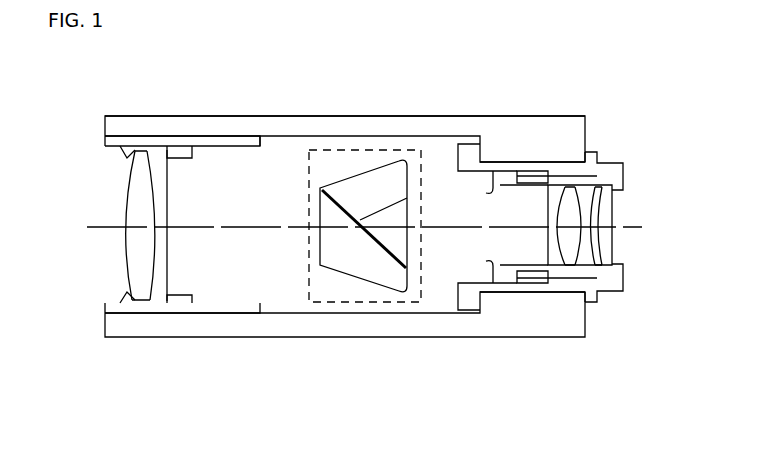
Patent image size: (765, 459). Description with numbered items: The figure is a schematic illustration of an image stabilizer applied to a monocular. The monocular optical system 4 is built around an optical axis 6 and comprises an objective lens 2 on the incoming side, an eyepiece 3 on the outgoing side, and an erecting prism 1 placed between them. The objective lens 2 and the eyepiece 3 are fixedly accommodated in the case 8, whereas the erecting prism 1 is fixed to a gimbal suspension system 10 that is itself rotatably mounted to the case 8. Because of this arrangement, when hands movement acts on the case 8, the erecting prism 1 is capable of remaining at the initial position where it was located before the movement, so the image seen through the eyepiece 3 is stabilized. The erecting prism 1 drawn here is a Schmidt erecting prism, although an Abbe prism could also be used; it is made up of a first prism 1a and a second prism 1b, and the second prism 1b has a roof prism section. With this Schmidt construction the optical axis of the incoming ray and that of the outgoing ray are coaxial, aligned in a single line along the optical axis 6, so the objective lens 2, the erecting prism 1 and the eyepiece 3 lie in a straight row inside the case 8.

The erecting prism 1 is at (335, 248).
The first prism 1a is at (328, 218).
The second prism 1b is at (352, 187).
The objective lens 2 is at (131, 270).
The eyepiece 3 is at (613, 243).
The monocular optical system 4 is at (235, 352).
The optical axis 6 is at (107, 226).
The case 8 is at (147, 128).
The gimbal suspension system 10 is at (368, 305).